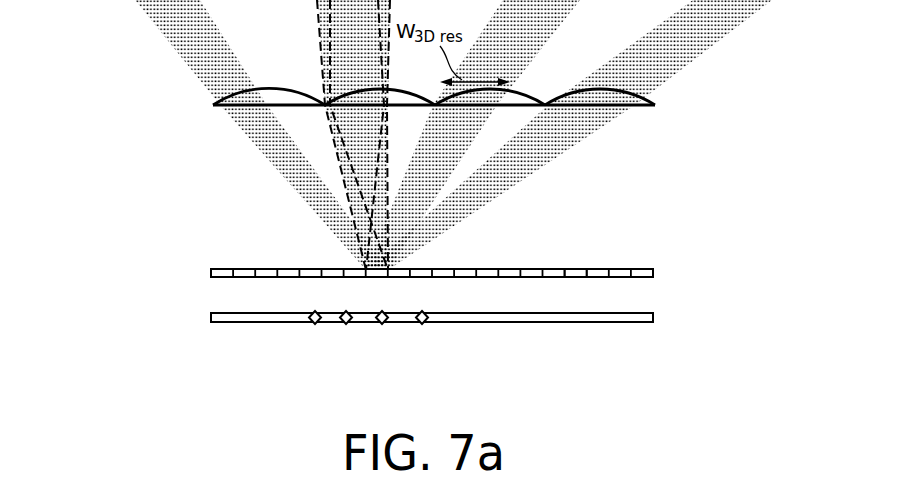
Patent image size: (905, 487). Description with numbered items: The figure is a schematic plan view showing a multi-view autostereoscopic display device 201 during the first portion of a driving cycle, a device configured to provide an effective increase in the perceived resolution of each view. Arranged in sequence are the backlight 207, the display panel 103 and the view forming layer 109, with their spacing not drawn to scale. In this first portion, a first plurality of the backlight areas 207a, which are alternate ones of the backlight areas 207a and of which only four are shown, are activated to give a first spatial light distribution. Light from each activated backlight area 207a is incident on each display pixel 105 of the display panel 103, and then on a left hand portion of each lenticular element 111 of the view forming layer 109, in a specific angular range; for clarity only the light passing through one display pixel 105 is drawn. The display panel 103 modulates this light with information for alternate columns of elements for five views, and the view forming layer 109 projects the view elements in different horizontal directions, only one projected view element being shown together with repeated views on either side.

The multi-view autostereoscopic display device 201 is at (100, 40).
The view forming layer 109 is at (400, 120).
The lenticular element 111 is at (645, 107).
The display panel 103 is at (398, 250).
The display pixel 105 is at (575, 268).
The backlight 207 is at (465, 338).
The backlight areas 207a is at (315, 325).